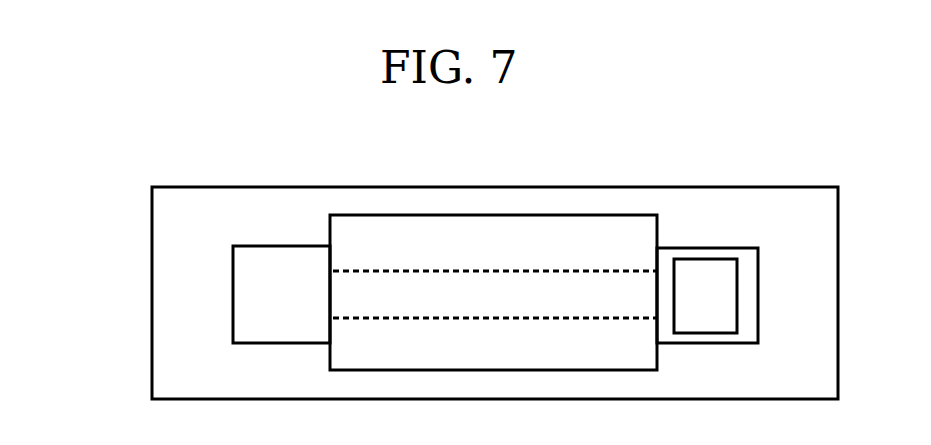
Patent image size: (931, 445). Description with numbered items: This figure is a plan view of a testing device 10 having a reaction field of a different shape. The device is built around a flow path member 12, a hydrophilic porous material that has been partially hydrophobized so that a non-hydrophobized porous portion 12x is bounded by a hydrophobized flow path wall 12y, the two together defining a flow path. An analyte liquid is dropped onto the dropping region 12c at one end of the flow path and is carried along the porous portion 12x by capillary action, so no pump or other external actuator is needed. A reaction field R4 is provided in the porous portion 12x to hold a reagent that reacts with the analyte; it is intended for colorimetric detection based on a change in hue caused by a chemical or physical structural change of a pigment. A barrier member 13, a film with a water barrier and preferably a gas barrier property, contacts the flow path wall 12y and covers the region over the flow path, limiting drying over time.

The testing device 10 is at (832, 129).
The flow path member 12 is at (140, 188).
The dropping region 12c is at (280, 308).
The porous portion 12x is at (490, 268).
The flow path wall 12y is at (403, 223).
The barrier member 13 is at (575, 217).
The reaction field R4 is at (700, 325).